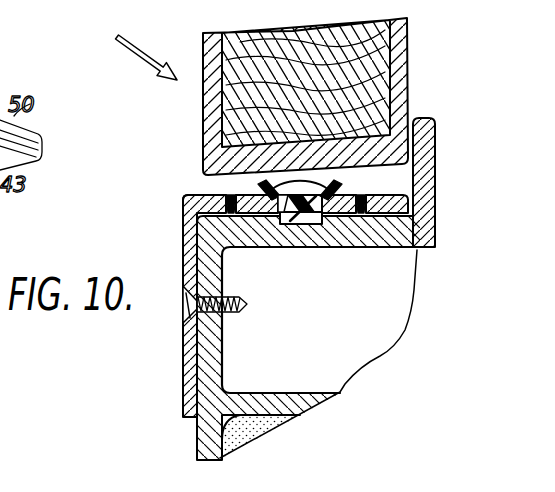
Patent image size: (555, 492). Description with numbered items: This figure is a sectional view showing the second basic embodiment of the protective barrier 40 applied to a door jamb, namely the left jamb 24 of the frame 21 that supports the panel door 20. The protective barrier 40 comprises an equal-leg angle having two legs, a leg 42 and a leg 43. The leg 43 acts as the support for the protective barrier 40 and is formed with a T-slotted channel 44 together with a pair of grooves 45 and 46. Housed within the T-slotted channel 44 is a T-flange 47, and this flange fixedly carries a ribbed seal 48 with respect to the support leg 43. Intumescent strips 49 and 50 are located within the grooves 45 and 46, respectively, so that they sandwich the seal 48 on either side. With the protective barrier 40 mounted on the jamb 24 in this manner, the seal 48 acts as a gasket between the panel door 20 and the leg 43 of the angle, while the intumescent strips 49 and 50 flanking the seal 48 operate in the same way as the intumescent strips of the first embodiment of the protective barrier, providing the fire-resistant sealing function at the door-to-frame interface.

The panel door 20 is at (203, 44).
The frame 21 is at (191, 451).
The left jamb 24 is at (197, 431).
The protective barrier 40 is at (181, 193).
The leg 42 is at (180, 337).
The leg 43 is at (388, 243).
The T-slotted channel 44 is at (312, 226).
The groove 45 is at (183, 212).
The groove 46 is at (365, 214).
The T-flange 47 is at (290, 225).
The ribbed seal 48 is at (322, 173).
The intumescent strip 49 is at (226, 197).
The intumescent strip 50 is at (366, 196).